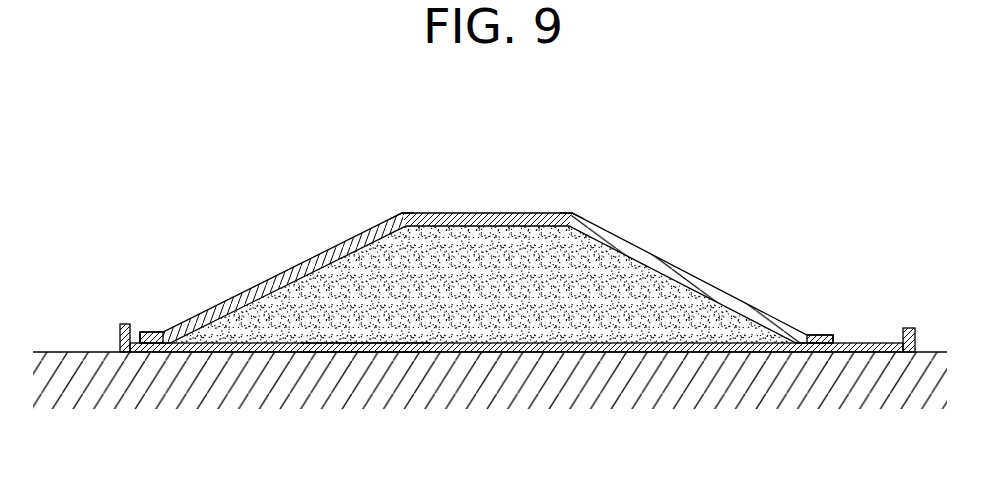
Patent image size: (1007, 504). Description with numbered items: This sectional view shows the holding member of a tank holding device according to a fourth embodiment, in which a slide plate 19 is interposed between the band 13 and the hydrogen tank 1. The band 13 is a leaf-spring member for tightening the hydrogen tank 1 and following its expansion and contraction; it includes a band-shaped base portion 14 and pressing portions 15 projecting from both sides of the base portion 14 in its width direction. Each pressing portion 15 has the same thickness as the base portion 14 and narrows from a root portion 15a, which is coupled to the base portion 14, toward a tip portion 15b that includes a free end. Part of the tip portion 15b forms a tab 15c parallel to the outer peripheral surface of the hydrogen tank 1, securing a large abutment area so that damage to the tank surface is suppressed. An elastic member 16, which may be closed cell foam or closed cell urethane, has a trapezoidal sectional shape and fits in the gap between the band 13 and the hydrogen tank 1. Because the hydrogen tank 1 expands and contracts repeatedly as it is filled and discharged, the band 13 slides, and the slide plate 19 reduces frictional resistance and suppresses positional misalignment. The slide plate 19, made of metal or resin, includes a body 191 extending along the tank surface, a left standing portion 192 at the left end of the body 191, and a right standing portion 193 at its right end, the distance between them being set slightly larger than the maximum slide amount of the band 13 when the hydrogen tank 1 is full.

The hydrogen tank 1 is at (598, 390).
The band 13 is at (509, 211).
The base portion 14 is at (441, 212).
The pressing portion 15 is at (285, 270).
The root portion 15a is at (402, 213).
The tip portion 15b is at (133, 338).
The tab 15c is at (150, 332).
The elastic member 16 is at (432, 298).
The slide plate 19 is at (668, 353).
The body 191 is at (365, 353).
The left standing portion 192 is at (117, 338).
The right standing portion 193 is at (917, 333).